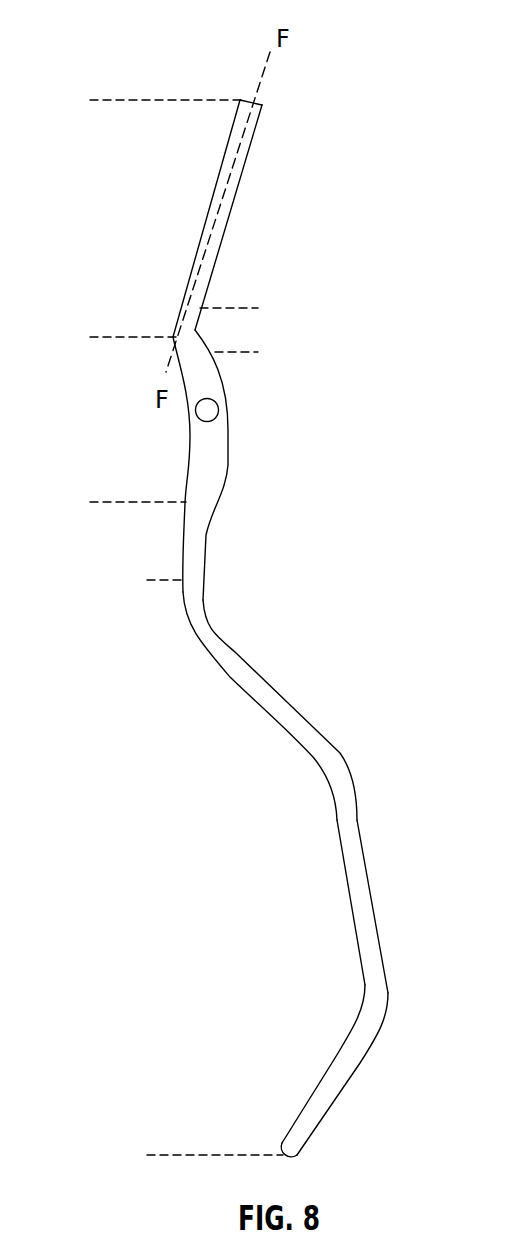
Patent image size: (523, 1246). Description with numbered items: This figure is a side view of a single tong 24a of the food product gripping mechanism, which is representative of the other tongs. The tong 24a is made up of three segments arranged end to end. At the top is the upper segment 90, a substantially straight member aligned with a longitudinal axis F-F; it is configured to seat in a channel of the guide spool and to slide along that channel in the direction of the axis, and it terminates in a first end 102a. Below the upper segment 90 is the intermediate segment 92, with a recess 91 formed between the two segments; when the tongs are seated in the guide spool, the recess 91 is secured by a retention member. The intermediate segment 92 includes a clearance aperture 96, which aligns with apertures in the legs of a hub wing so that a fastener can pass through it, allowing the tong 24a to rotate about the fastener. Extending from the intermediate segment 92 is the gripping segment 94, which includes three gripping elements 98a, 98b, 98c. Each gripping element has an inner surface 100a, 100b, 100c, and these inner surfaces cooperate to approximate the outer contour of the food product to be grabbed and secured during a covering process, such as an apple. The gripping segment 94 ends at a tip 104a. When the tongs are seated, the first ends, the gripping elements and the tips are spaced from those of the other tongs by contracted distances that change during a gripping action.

The tong 24a is at (320, 611).
The upper segment 90 is at (90, 100).
The recess 91 is at (258, 308).
The intermediate segment 92 is at (90, 337).
The gripping segment 94 is at (147, 580).
The clearance aperture 96 is at (216, 418).
The gripping element 98a is at (260, 672).
The gripping element 98b is at (363, 855).
The gripping element 98c is at (350, 1078).
The inner surface 100a is at (272, 715).
The inner surface 100b is at (359, 947).
The inner surface 100c is at (308, 1101).
The first end 102a is at (256, 133).
The tip 104a is at (308, 1133).